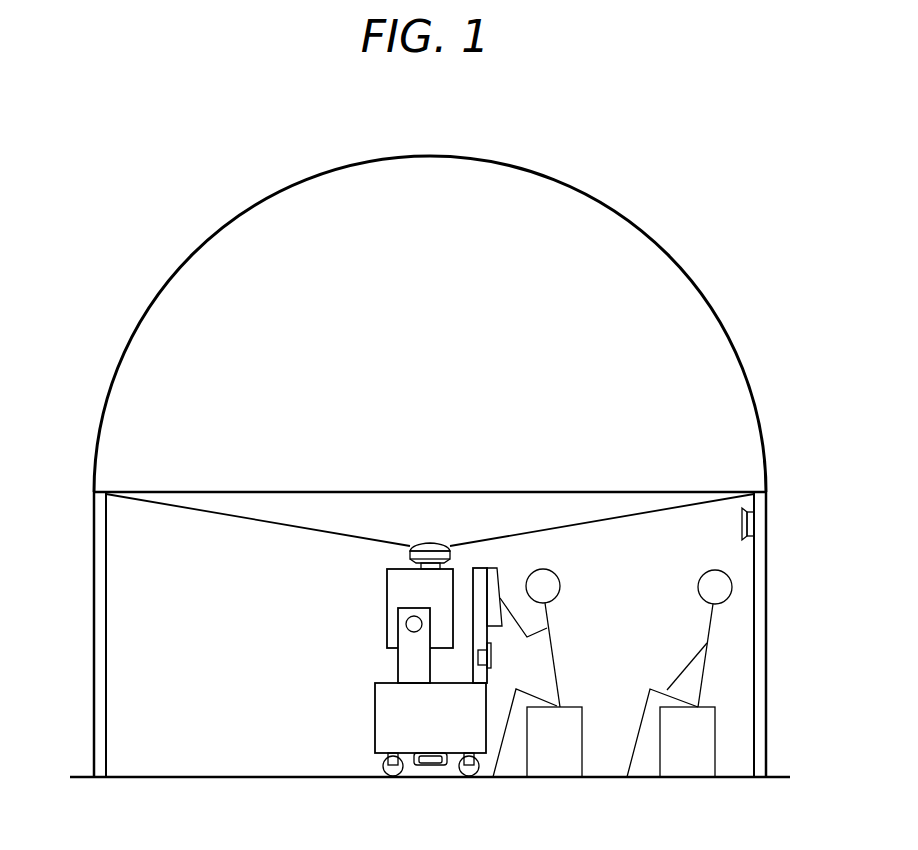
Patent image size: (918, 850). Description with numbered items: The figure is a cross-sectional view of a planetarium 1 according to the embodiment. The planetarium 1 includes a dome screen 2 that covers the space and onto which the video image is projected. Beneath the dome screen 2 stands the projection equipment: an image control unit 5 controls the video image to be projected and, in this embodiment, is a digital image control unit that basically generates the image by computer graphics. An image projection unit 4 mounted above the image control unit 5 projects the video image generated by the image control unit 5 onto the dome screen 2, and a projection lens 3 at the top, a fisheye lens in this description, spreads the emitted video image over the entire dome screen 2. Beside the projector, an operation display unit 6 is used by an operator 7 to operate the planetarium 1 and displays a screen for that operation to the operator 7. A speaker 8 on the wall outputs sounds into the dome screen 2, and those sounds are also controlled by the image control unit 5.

The planetarium 1 is at (430, 441).
The dome screen 2 is at (673, 260).
The projection lens 3 is at (410, 552).
The image projection unit 4 is at (395, 598).
The image control unit 5 is at (382, 708).
The operation display unit 6 is at (488, 570).
The operator 7 is at (552, 646).
The speaker 8 is at (757, 525).